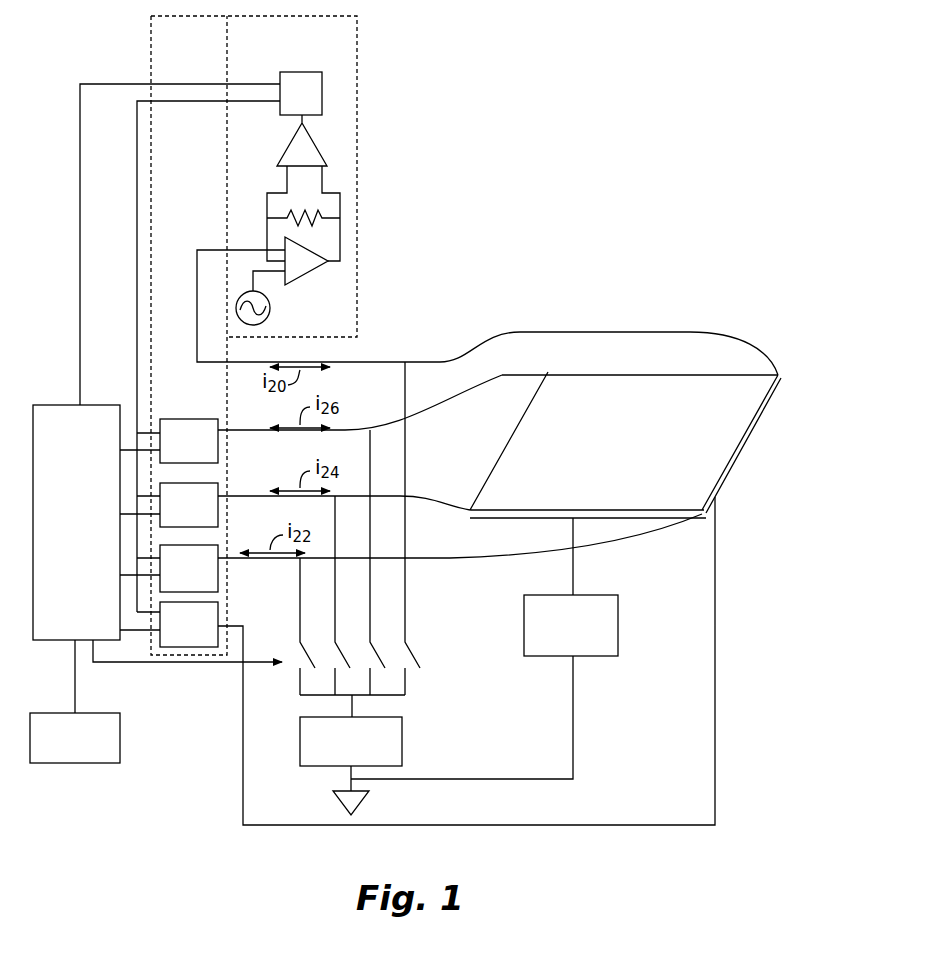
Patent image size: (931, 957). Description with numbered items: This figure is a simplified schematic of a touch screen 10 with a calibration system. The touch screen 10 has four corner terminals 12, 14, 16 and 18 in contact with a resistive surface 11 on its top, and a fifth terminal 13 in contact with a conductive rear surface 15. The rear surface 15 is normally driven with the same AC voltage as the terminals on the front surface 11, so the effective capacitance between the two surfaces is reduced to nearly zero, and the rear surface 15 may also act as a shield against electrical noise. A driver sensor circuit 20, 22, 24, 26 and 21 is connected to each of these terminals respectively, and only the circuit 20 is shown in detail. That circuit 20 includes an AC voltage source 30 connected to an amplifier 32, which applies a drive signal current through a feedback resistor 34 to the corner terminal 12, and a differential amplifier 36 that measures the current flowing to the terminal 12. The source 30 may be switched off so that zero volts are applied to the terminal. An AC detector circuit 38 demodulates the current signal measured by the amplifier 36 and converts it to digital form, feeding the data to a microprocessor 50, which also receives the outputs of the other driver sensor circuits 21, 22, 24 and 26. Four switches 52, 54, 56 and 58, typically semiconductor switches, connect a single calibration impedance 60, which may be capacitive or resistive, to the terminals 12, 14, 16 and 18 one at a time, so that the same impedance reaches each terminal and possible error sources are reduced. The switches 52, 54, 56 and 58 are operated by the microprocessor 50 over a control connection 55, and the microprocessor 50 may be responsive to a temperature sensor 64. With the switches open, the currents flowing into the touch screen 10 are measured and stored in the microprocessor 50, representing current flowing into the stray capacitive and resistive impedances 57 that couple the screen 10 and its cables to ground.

The touch screen 10 is at (611, 456).
The resistive surface 11 is at (751, 414).
The corner terminal 12 is at (780, 372).
The fifth terminal 13 is at (720, 493).
The corner terminal 14 is at (697, 504).
The conductive rear surface 15 is at (755, 438).
The corner terminal 16 is at (476, 506).
The corner terminal 18 is at (551, 370).
The driver sensor circuit 20 is at (341, 54).
The driver sensor circuit 21 is at (186, 651).
The driver sensor circuit 22 is at (221, 579).
The driver sensor circuit 24 is at (221, 515).
The driver sensor circuit 26 is at (221, 451).
The AC voltage source 30 is at (274, 312).
The amplifier 32 is at (312, 270).
The feedback resistor 34 is at (320, 227).
The differential amplifier 36 is at (322, 151).
The AC detector circuit 38 is at (326, 98).
The microprocessor 50 is at (62, 436).
The switch 52 is at (419, 655).
The switch 54 is at (296, 648).
The control connection 55 is at (150, 663).
The switch 56 is at (340, 646).
The stray impedance 57 is at (621, 630).
The switch 58 is at (377, 646).
The calibration impedance 60 is at (407, 740).
The temperature sensor 64 is at (42, 712).